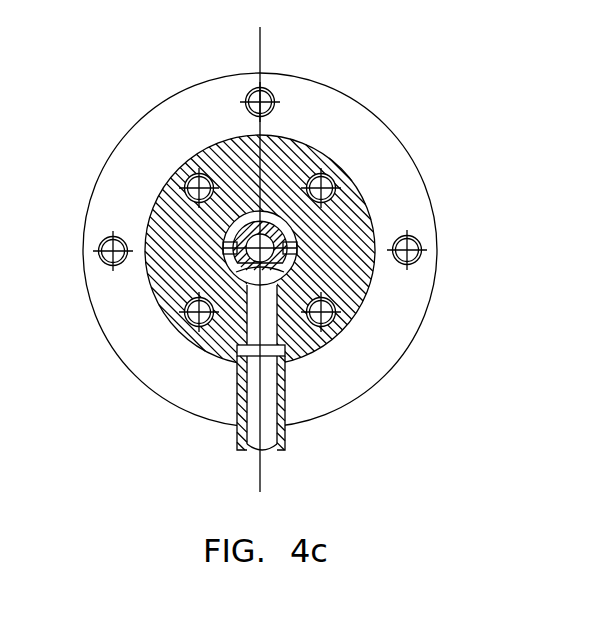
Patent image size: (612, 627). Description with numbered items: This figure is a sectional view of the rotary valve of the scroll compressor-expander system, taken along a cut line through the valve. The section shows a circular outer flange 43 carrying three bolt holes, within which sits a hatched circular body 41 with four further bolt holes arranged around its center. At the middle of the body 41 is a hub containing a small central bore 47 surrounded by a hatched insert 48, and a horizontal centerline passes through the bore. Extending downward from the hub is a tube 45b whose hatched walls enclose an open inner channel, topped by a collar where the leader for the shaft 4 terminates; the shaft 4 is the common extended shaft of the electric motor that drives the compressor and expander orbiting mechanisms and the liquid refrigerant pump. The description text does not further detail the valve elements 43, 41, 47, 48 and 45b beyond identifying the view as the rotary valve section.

The flange 43 is at (143, 160).
The hatched disk body 41 is at (303, 138).
The central bore 47 is at (297, 248).
The insert 48 is at (303, 273).
The drive shaft 4 is at (232, 348).
The pipe 45b is at (287, 428).